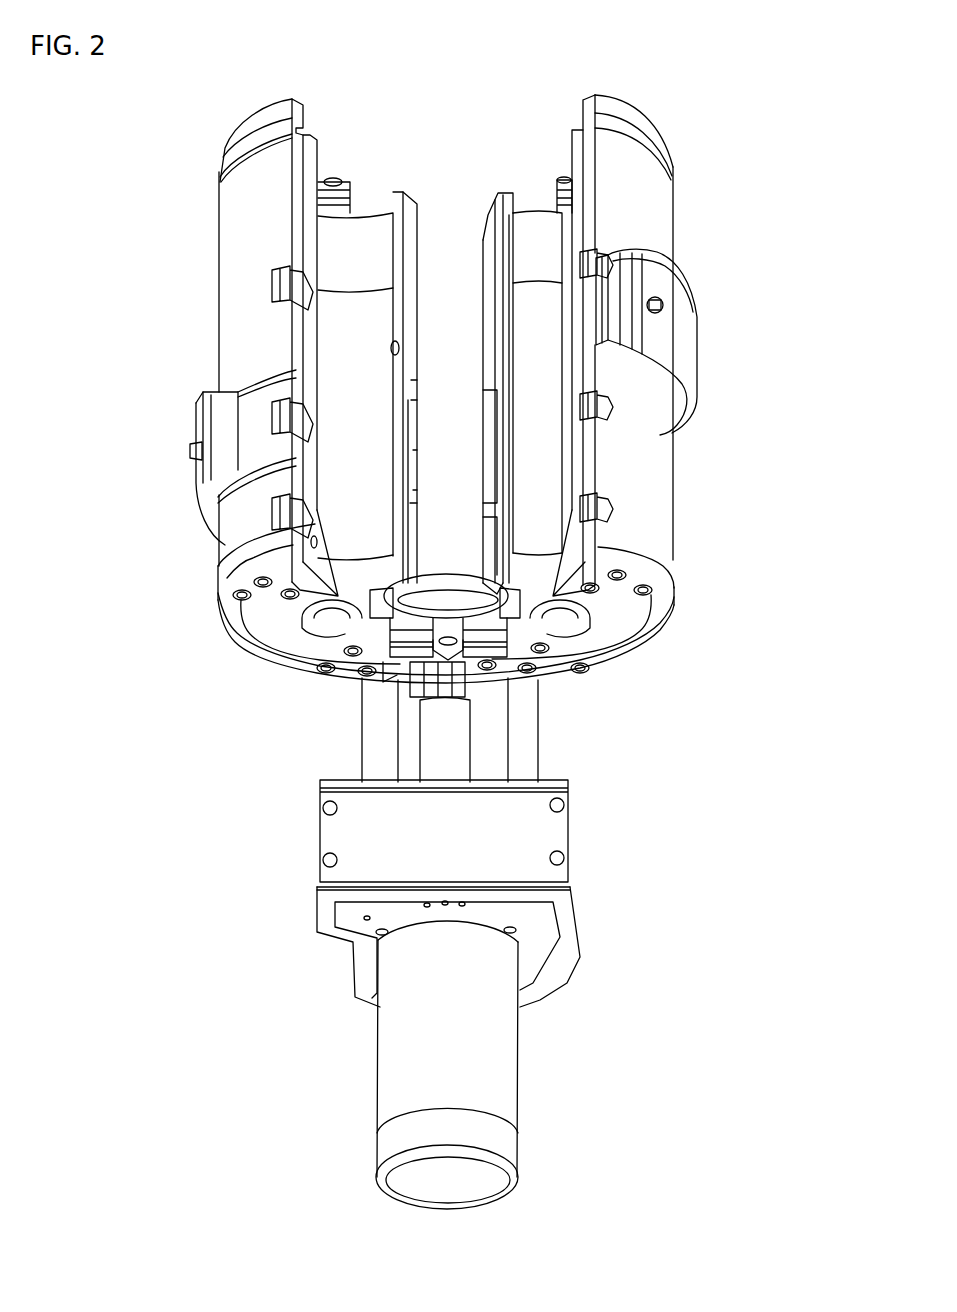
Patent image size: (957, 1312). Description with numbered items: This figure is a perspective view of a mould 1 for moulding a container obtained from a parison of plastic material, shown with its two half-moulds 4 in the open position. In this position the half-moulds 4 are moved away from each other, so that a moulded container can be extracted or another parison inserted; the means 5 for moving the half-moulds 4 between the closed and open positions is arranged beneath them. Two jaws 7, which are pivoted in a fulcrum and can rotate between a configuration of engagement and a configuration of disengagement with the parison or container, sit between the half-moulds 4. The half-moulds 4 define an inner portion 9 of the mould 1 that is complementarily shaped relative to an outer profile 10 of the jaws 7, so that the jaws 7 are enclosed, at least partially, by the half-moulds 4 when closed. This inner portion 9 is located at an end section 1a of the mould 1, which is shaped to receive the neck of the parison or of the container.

The mould 1 is at (772, 248).
The end section 1a is at (205, 640).
The half-moulds 4 is at (260, 193).
The means for moving the half-moulds 5 is at (405, 740).
The jaws 7 is at (352, 605).
The inner portion 9 is at (317, 617).
The outer profile 10 is at (357, 592).